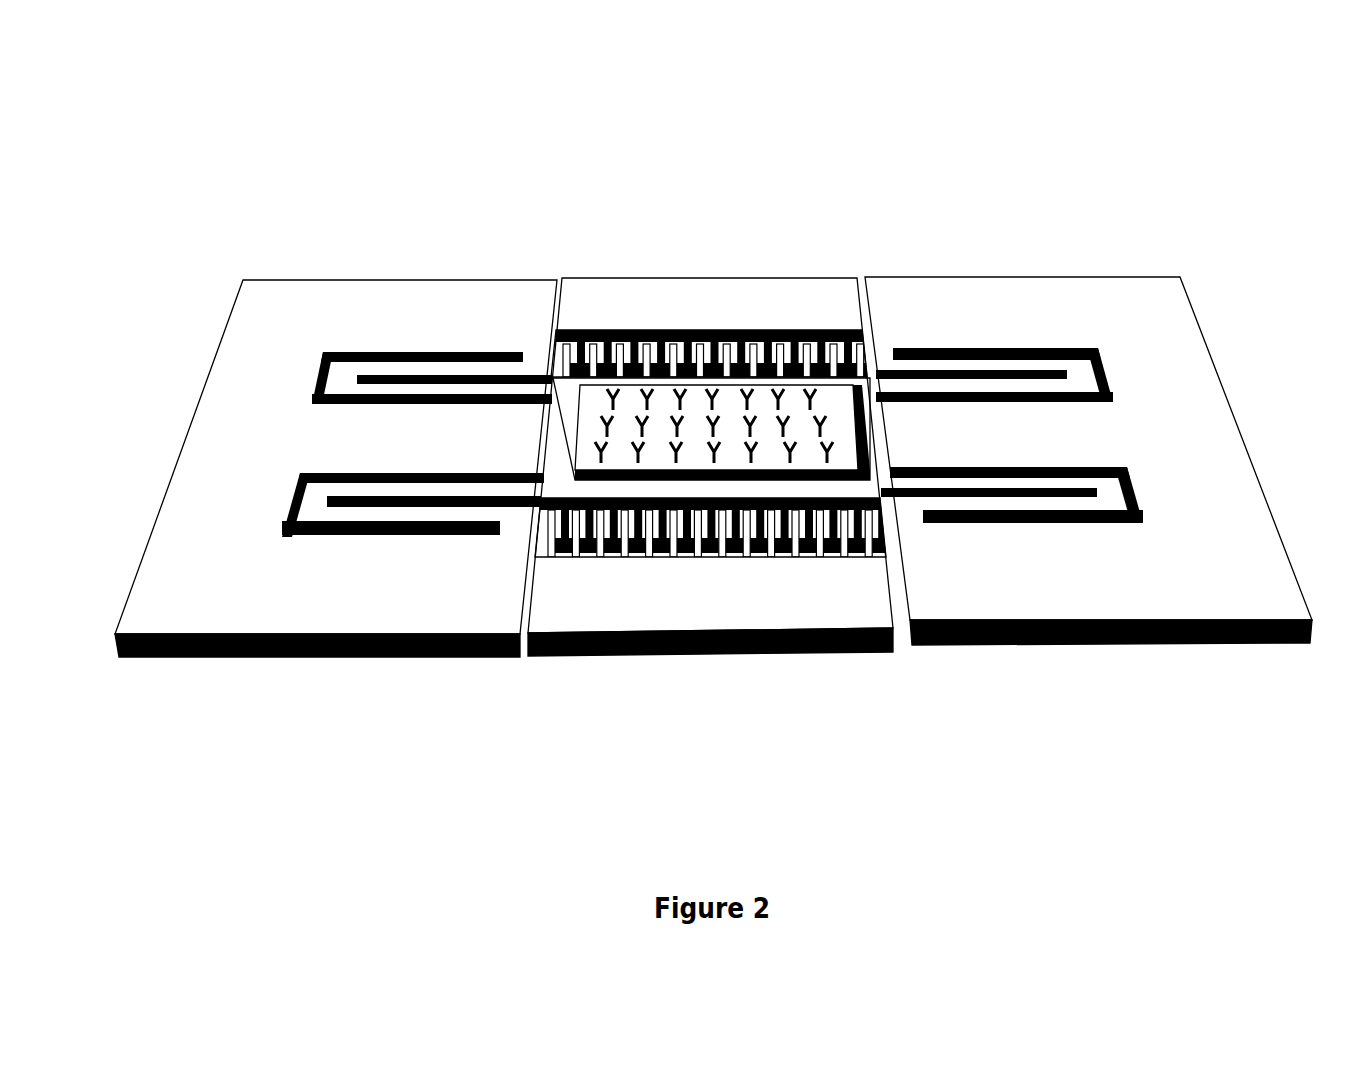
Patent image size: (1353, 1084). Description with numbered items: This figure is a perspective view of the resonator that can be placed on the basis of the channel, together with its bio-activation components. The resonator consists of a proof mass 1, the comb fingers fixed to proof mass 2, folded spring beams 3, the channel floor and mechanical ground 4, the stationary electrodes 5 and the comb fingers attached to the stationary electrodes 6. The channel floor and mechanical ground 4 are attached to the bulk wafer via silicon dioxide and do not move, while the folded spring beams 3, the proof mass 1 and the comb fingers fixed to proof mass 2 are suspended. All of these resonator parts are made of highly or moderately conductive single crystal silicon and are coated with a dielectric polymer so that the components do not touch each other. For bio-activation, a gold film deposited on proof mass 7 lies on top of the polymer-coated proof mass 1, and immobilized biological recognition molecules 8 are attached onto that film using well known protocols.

The proof mass 1 is at (560, 483).
The comb fingers fixed to proof mass 2 is at (643, 560).
The folded spring beams 3 is at (950, 360).
The channel floor and mechanical ground 4 is at (937, 305).
The stationary electrodes 5 is at (713, 287).
The comb fingers attached to the stationary electrodes 6 is at (763, 328).
The gold film deposited on proof mass 7 is at (845, 443).
The immobilized biological recognition molecules 8 is at (698, 328).